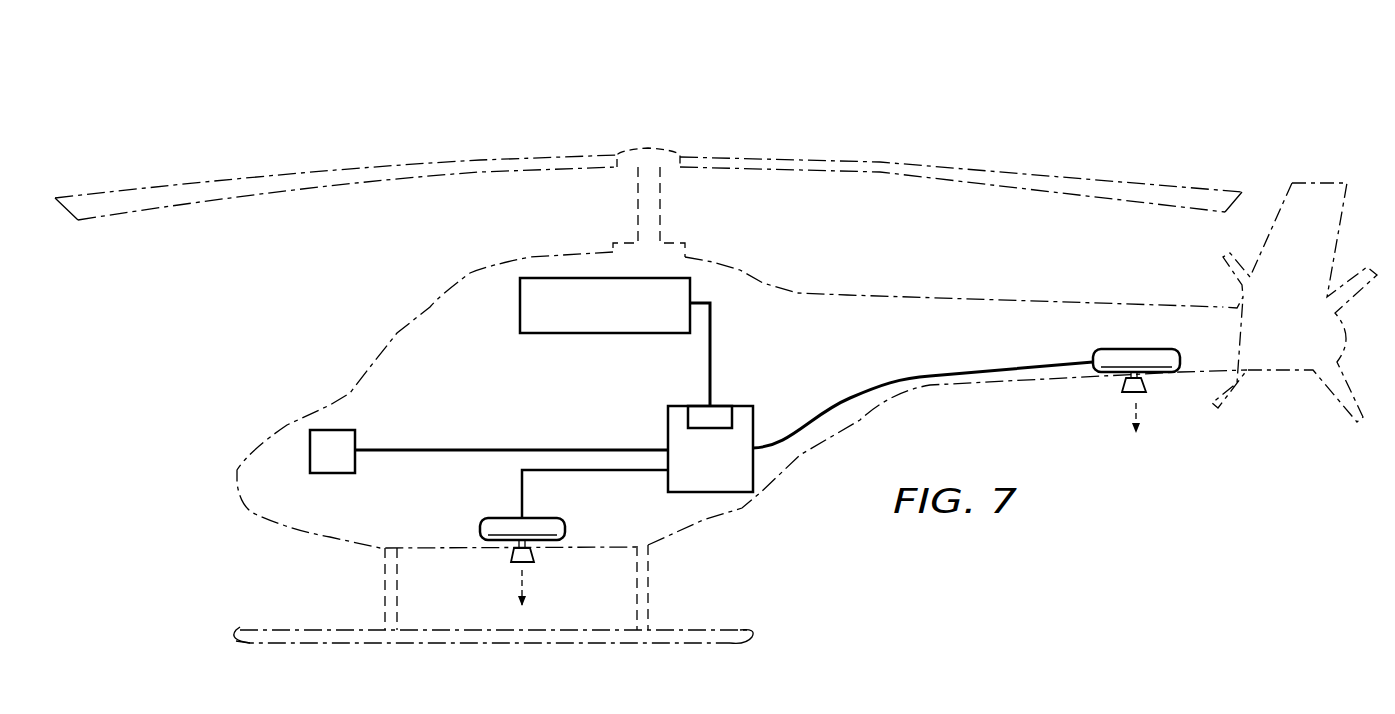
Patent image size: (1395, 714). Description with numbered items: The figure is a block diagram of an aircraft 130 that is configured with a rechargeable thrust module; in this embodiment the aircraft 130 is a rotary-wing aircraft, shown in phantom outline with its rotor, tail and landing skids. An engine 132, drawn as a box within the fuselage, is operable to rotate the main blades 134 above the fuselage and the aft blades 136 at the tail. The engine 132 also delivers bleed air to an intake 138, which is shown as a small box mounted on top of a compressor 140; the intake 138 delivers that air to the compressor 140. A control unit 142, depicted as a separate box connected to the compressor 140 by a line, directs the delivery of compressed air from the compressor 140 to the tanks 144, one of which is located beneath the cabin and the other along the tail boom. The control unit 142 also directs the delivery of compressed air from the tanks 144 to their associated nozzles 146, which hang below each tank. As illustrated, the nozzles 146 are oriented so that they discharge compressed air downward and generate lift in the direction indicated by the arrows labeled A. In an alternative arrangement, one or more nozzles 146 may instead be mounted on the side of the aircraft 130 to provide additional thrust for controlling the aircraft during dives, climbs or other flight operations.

The aircraft 130 is at (368, 92).
The engine 132 is at (520, 304).
The main blades 134 is at (1152, 178).
The aft blades 136 is at (1340, 412).
The intake 138 is at (710, 428).
The compressor 140 is at (668, 425).
The control unit 142 is at (340, 473).
The tanks 144 is at (480, 525).
The nozzles 146 is at (510, 552).